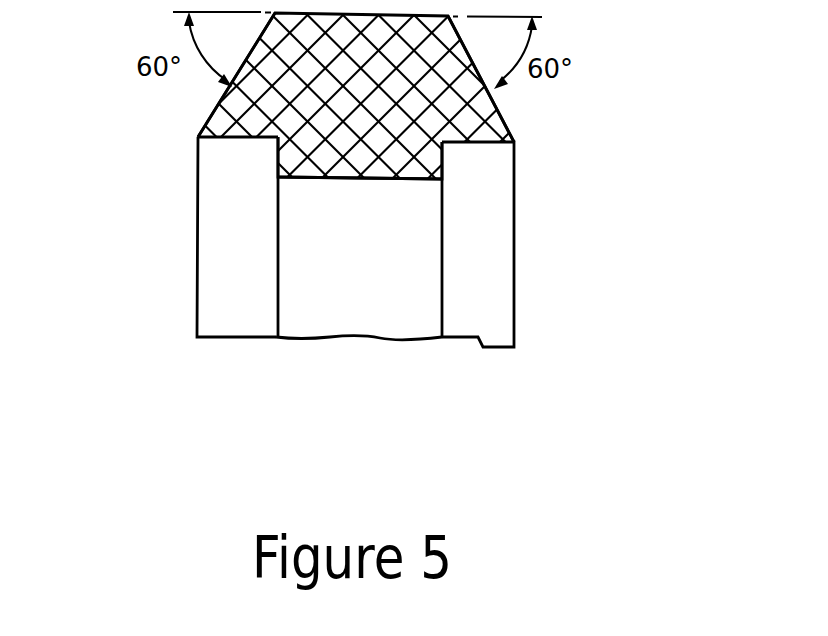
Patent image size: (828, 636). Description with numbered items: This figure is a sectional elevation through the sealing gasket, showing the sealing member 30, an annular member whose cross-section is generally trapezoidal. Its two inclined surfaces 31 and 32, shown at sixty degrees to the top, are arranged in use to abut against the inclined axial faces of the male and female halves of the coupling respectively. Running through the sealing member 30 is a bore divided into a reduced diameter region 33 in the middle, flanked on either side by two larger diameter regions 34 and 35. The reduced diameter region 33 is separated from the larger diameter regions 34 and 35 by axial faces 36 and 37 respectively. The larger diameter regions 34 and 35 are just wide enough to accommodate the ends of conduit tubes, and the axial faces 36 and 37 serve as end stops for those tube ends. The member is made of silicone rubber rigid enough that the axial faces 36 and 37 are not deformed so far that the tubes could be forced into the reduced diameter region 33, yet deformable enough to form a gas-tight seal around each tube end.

The sealing member 30 is at (398, 157).
The inclined surface 31 is at (503, 115).
The inclined surface 32 is at (213, 117).
The reduced diameter region 33 is at (316, 289).
The larger diameter region 34 is at (215, 243).
The larger diameter region 35 is at (492, 255).
The axial face 36 is at (217, 161).
The axial face 37 is at (443, 157).